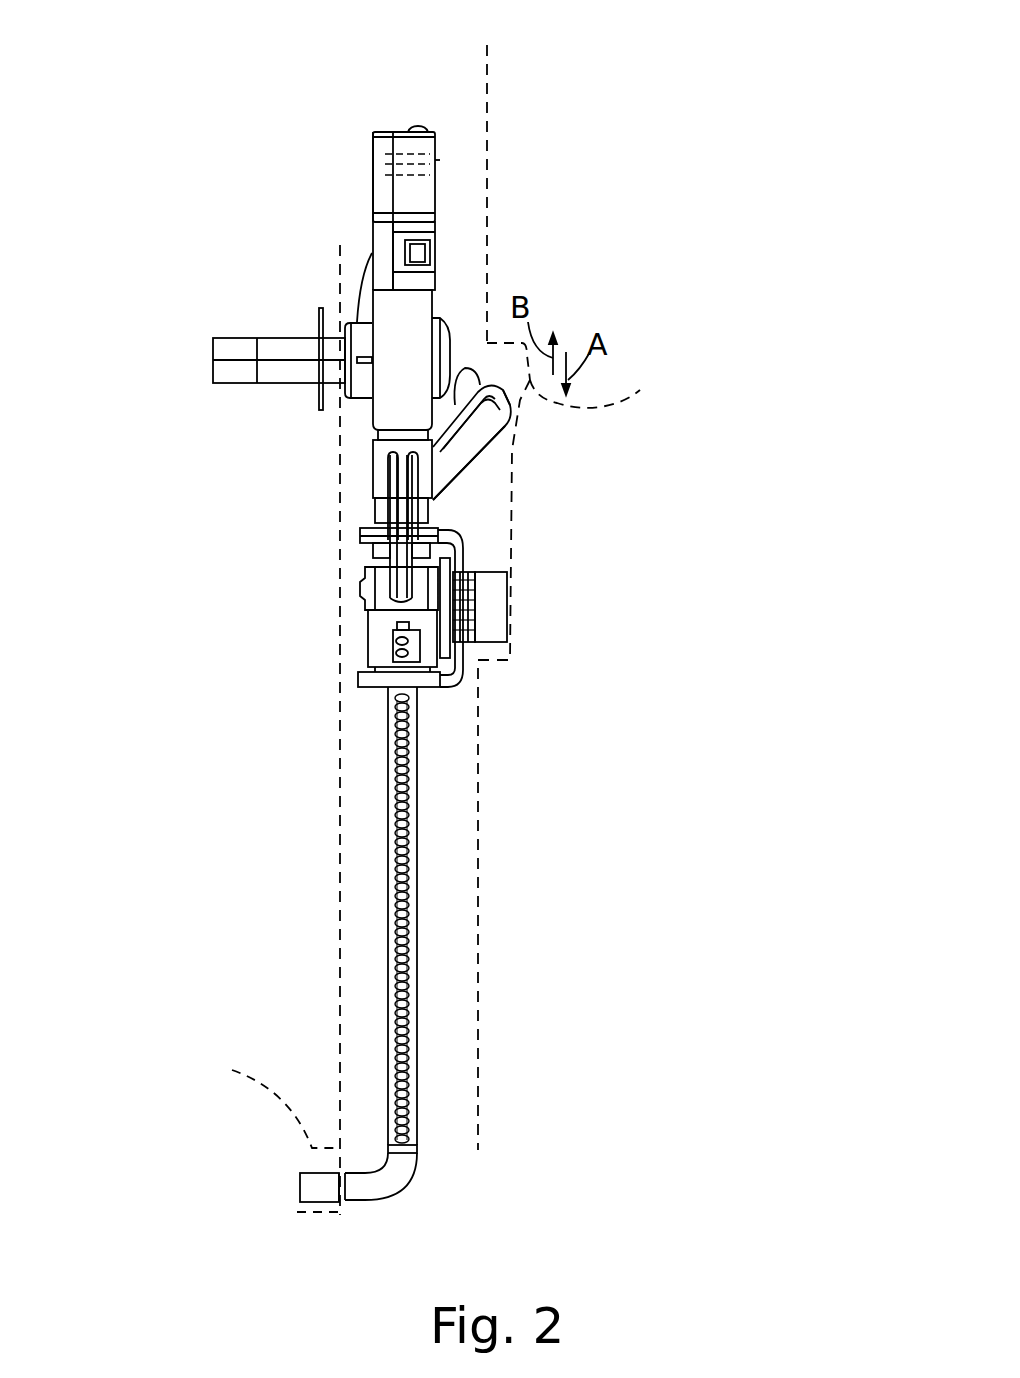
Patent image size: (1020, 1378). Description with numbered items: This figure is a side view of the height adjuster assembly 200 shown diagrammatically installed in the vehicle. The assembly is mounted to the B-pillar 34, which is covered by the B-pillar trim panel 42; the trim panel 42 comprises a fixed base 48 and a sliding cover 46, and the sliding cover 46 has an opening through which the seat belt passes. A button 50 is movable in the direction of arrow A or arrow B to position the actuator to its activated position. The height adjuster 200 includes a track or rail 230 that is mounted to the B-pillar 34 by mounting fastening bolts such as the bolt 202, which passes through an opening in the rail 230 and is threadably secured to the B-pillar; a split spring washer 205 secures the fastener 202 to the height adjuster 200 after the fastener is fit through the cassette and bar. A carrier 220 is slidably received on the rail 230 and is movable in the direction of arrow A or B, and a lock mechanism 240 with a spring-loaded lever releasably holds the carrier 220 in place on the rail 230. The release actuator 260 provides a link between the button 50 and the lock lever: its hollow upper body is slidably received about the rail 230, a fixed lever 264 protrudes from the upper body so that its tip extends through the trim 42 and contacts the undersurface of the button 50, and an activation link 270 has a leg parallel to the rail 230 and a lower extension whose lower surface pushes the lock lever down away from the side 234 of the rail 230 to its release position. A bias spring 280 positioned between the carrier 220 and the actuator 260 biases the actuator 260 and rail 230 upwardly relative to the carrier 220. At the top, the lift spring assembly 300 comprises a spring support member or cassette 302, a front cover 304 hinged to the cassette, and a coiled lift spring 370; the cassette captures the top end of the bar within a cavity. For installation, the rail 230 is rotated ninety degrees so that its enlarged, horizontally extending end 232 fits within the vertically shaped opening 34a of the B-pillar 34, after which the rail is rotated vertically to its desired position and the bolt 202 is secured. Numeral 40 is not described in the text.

The height adjuster assembly 200 is at (402, 108).
The split spring washer 205 is at (317, 328).
The mounting fastening bolt 202 is at (440, 318).
The lift spring assembly 300 is at (438, 179).
The spring support member or cassette 302 is at (405, 405).
The front cover 304 is at (408, 130).
The coiled lift spring 370 is at (440, 157).
The B-pillar trim panel 42 is at (497, 180).
The sliding cover 46 is at (490, 220).
The button 50 is at (598, 382).
The mounting flange 40 is at (532, 440).
The release actuator 260 is at (478, 466).
The fixed lever 264 is at (505, 385).
The activation link 270 is at (405, 541).
The carrier 220 is at (455, 535).
The bias spring 280 is at (420, 577).
The lock mechanism 240 is at (374, 623).
The track or rail 230 is at (562, 920).
The side of rail 234 is at (417, 933).
The enlarged horizontally extending end 232 is at (312, 1192).
The fixed base 48 is at (495, 853).
The B-pillar 34 is at (337, 890).
The vertically shaped opening 34a is at (255, 1131).